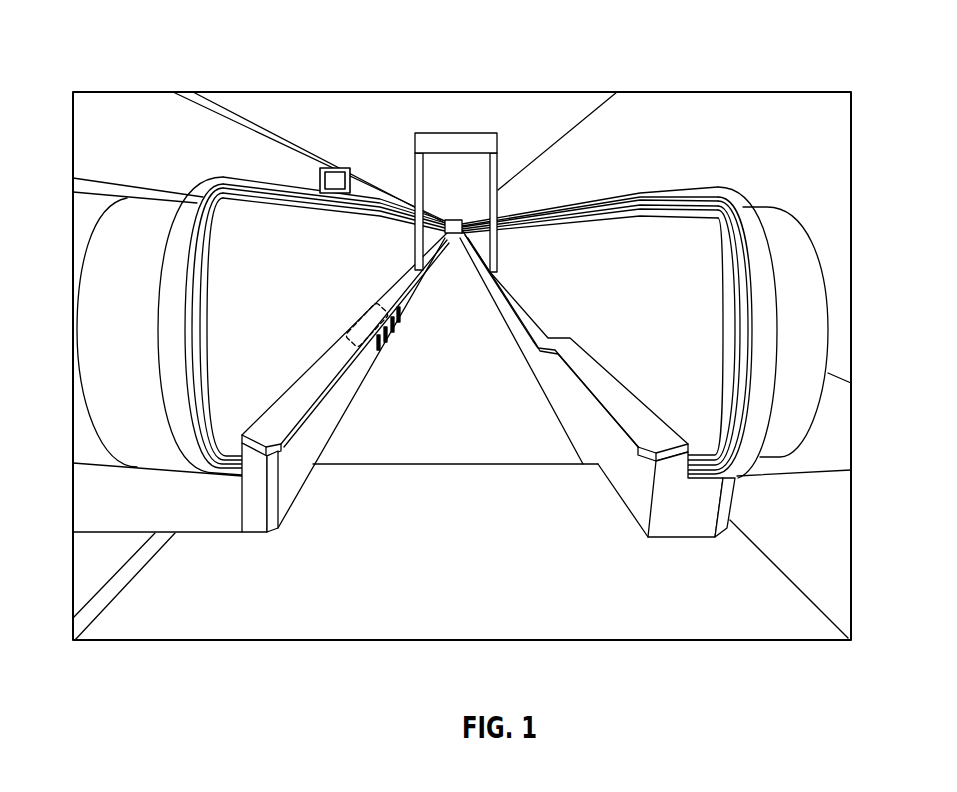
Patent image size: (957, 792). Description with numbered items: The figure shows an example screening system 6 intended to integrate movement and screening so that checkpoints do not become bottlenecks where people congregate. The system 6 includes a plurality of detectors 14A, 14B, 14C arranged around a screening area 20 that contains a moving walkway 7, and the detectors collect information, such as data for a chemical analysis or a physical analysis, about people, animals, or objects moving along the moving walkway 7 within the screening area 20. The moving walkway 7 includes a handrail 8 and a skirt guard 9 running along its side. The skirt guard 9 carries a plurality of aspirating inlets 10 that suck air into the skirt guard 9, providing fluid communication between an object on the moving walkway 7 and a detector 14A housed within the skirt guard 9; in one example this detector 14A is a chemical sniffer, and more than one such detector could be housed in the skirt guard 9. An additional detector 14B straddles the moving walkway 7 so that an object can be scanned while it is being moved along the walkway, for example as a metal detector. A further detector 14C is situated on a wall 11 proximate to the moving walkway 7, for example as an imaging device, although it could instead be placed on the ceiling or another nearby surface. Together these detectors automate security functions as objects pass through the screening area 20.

The screening system 6 is at (556, 73).
The moving walkway 7 is at (422, 438).
The handrail 8 is at (167, 360).
The skirt guard 9 is at (293, 490).
The aspirating inlets 10 is at (381, 350).
The wall 11 is at (373, 197).
The detector 14A is at (363, 322).
The detector 14B is at (470, 140).
The detector 14C is at (320, 178).
The screening area 20 is at (560, 160).